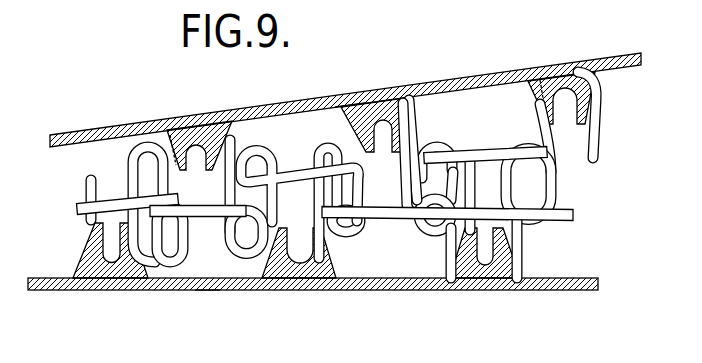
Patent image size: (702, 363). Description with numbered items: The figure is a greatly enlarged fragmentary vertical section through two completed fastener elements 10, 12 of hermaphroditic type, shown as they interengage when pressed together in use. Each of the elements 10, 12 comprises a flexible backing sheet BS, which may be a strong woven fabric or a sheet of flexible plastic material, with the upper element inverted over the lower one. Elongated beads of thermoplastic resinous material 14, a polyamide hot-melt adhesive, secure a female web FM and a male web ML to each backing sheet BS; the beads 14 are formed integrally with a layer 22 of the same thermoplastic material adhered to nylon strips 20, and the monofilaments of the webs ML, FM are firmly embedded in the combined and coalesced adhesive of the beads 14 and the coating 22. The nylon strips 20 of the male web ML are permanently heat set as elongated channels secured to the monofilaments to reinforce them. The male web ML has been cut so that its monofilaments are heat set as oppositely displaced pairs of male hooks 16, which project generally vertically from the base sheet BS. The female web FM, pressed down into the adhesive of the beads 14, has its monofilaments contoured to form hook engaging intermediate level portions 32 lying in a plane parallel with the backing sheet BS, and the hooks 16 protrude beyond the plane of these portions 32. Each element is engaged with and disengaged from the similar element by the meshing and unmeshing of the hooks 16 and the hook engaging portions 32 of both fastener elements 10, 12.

The fastener element 10 is at (452, 78).
The fastener element 12 is at (397, 294).
The beads of thermoplastic resinous material 14 is at (205, 126).
The male hooks 16 is at (140, 150).
The nylon strip 20 is at (180, 130).
The layer of thermoplastic material 22 is at (246, 152).
The hook engaging intermediate level portions 32 is at (296, 176).
The backing sheet BS is at (350, 90).
The female web FM is at (425, 115).
The male web ML is at (472, 206).